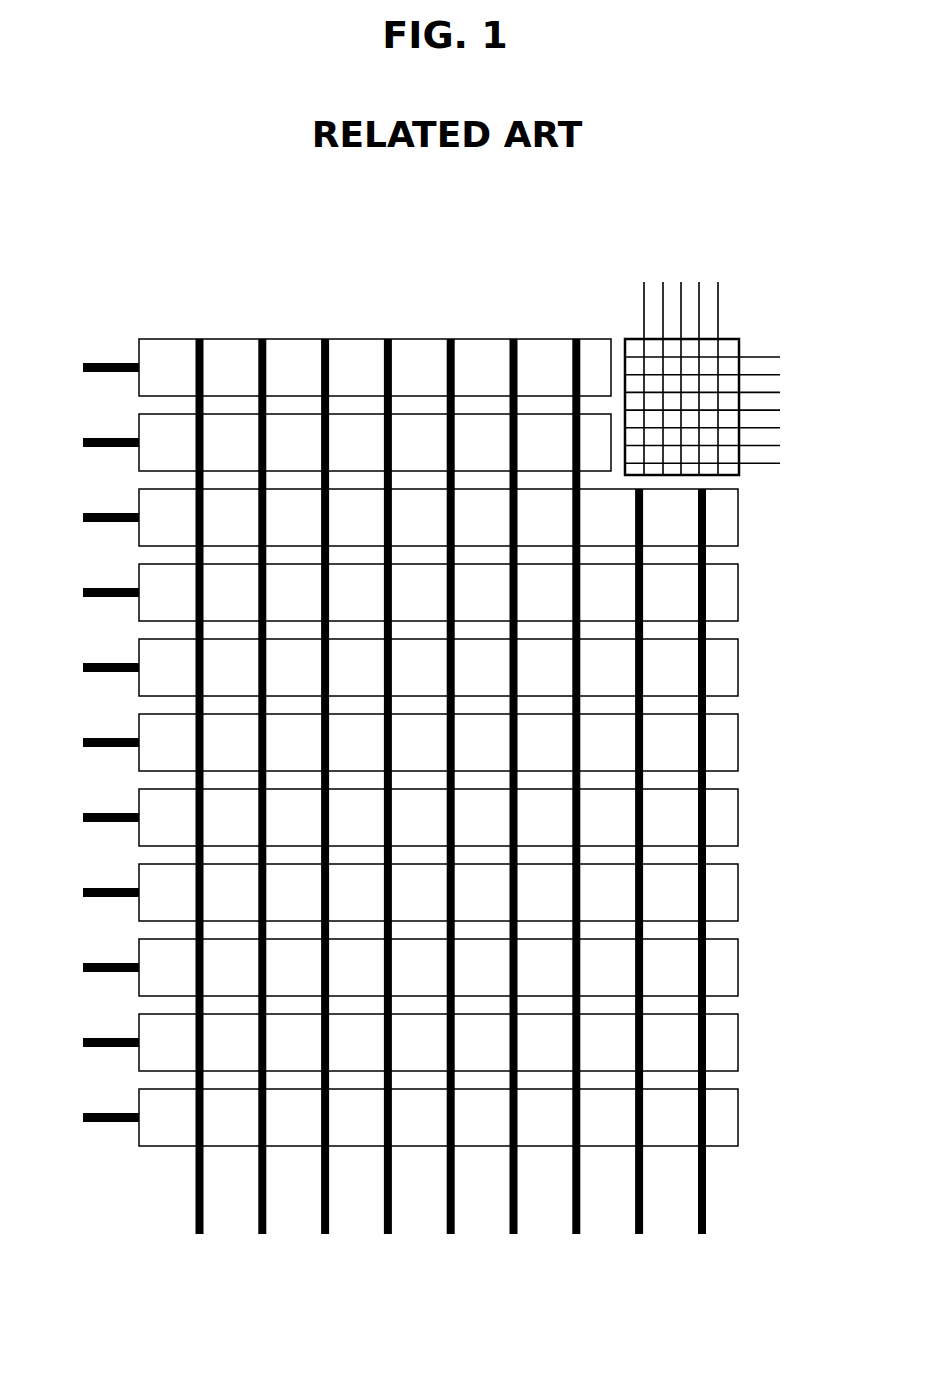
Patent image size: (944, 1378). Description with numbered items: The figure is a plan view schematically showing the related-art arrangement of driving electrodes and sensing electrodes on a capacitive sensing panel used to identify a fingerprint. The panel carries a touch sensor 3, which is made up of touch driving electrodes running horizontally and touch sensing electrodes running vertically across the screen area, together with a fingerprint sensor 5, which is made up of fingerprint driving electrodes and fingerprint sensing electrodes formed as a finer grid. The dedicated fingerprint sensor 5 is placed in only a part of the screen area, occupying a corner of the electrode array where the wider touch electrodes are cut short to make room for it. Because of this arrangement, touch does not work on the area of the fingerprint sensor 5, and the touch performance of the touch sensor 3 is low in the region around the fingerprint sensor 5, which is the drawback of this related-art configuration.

The touch sensor 3 is at (446, 786).
The fingerprint sensor 5 is at (742, 356).